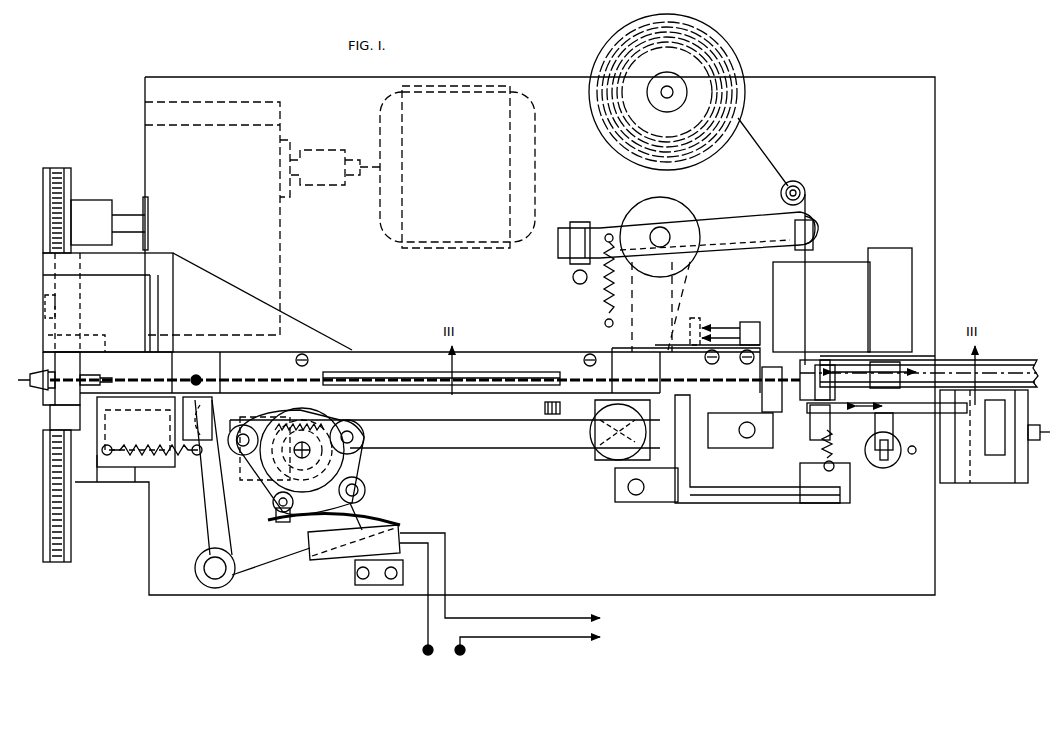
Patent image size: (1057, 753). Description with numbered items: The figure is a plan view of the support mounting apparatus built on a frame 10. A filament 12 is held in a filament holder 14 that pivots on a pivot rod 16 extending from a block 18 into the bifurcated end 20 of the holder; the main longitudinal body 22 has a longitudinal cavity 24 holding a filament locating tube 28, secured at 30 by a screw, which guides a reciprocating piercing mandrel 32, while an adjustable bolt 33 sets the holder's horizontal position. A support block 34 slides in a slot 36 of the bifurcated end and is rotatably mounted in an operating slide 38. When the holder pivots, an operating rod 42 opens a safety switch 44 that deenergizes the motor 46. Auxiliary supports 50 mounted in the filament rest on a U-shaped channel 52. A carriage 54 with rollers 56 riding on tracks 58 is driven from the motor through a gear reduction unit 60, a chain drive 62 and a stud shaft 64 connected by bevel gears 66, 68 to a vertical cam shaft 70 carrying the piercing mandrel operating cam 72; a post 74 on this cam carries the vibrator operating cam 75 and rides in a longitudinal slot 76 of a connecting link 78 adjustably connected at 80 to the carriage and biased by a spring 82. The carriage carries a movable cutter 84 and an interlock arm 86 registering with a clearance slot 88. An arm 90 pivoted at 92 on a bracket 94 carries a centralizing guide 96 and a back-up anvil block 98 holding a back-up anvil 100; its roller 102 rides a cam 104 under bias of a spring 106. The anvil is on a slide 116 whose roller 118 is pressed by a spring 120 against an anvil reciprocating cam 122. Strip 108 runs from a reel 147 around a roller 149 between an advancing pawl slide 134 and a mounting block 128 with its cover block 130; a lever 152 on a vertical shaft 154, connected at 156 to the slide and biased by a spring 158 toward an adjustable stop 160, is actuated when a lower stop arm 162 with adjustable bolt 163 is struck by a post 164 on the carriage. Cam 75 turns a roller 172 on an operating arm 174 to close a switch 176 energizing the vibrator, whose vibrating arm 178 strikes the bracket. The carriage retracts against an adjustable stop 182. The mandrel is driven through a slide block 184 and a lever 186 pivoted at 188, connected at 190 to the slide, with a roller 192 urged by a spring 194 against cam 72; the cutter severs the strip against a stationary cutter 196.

The frame 10 is at (935, 190).
The filament 12 is at (934, 358).
The filament holder 14 is at (250, 292).
The pivot rod 16 is at (43, 306).
The block 18 is at (43, 279).
The bifurcated end 20 is at (160, 275).
The main longitudinal body 22 is at (512, 352).
The longitudinal cavity 24 is at (374, 370).
The filament locating tube 28 is at (484, 340).
The screw 30 is at (196, 374).
The piercing mandrel 32 is at (28, 375).
The adjustable bolt 33 is at (696, 320).
The support block 34 is at (52, 398).
The slot 36 is at (46, 336).
The operating slide 38 is at (50, 418).
The operating rod 42 is at (748, 322).
The safety switch 44 is at (742, 320).
The motor 46 is at (535, 200).
The auxiliary support 50 is at (888, 364).
The U-shaped channel 52 is at (998, 360).
The carriage 54 is at (595, 456).
The rollers 56 is at (646, 352).
The track 58 is at (616, 352).
The gear reduction unit 60 is at (282, 256).
The chain drive 62 is at (43, 224).
The stud shaft 64 is at (136, 481).
The bevel gear 66 is at (264, 490).
The bevel gear 68 is at (334, 450).
The vertical cam shaft 70 is at (348, 438).
The piercing mandrel operating cam 72 is at (297, 518).
The post 74 is at (270, 424).
The vibrator operating cam 75 is at (312, 428).
The longitudinal slot 76 is at (243, 426).
The connecting link 78 is at (468, 450).
The adjustable connection 80 is at (592, 446).
The spring 82 is at (350, 428).
The movable cutter 84 is at (775, 366).
The interlock arm 86 is at (660, 352).
The clearance slot 88 is at (705, 355).
The arm 90 is at (918, 414).
The pivot 92 is at (968, 485).
The bracket 94 is at (996, 484).
The centralizing guide 96 is at (828, 366).
The back-up anvil block 98 is at (832, 440).
The back-up anvil 100 is at (814, 360).
The roller 102 is at (893, 460).
The cam 104 is at (882, 464).
The spring 106 is at (892, 470).
The strip 108 is at (783, 150).
The slide 116 is at (822, 468).
The roller 118 is at (812, 492).
The spring 120 is at (829, 450).
The anvil reciprocating cam 122 is at (746, 503).
The mounting block 128 is at (893, 248).
The removable cover block 130 is at (856, 262).
The advancing pawl slide 134 is at (812, 252).
The reel 147 is at (728, 62).
The roller 149 is at (806, 191).
The lever 152 is at (736, 212).
The vertical shaft 154 is at (660, 227).
The connection 156 is at (812, 223).
The spring 158 is at (602, 296).
The adjustable stop 160 is at (573, 280).
The lower stop arm 162 is at (684, 290).
The adjustable bolt 163 is at (592, 434).
The post 164 is at (740, 430).
The roller 172 is at (274, 506).
The operating arm 174 is at (362, 498).
The switch 176 is at (336, 561).
The vibrating arm 178 is at (1038, 442).
The adjustable stop 182 is at (545, 408).
The slide block 184 is at (106, 470).
The lever 186 is at (200, 533).
The pivot 188 is at (215, 588).
The connection 190 is at (182, 418).
The roller 192 is at (367, 468).
The spring 194 is at (127, 447).
The stationary cutter 196 is at (850, 360).